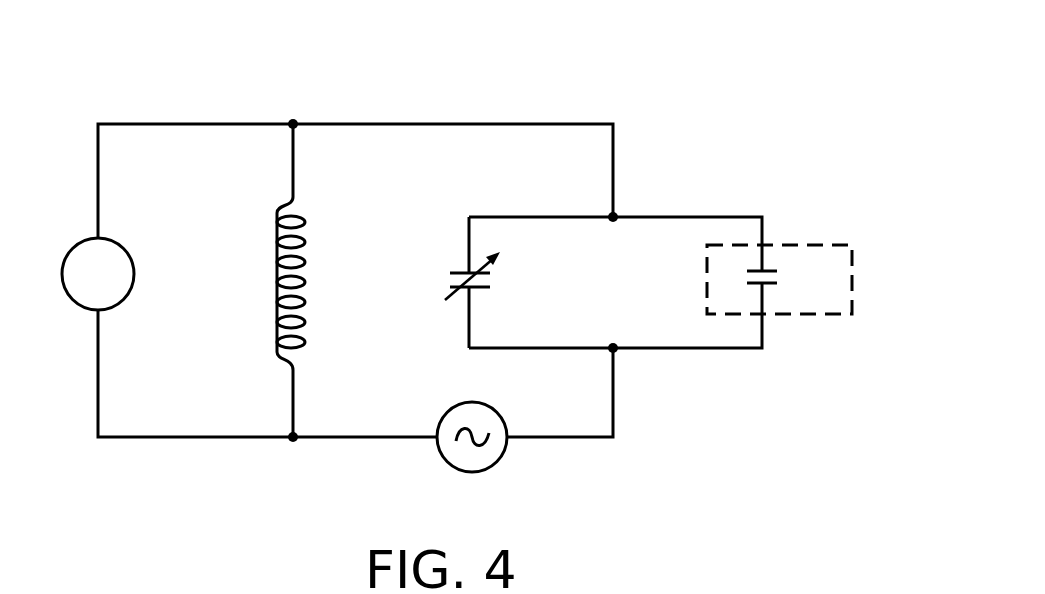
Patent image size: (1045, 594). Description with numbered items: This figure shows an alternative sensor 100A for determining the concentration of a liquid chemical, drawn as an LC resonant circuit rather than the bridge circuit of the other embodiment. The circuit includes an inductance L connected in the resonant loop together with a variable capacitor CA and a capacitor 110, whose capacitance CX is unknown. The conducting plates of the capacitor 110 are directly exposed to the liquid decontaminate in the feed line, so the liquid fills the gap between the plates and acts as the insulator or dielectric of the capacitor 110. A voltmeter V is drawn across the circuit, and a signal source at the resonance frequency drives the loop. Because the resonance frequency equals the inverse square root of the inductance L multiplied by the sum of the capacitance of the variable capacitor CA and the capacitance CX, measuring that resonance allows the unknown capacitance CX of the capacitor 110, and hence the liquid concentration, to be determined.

The sensor 100A is at (158, 99).
The capacitor 110 is at (852, 257).
The voltmeter V is at (98, 274).
The inductance L is at (304, 280).
The variable capacitor CA is at (451, 282).
The capacitance CX is at (784, 277).